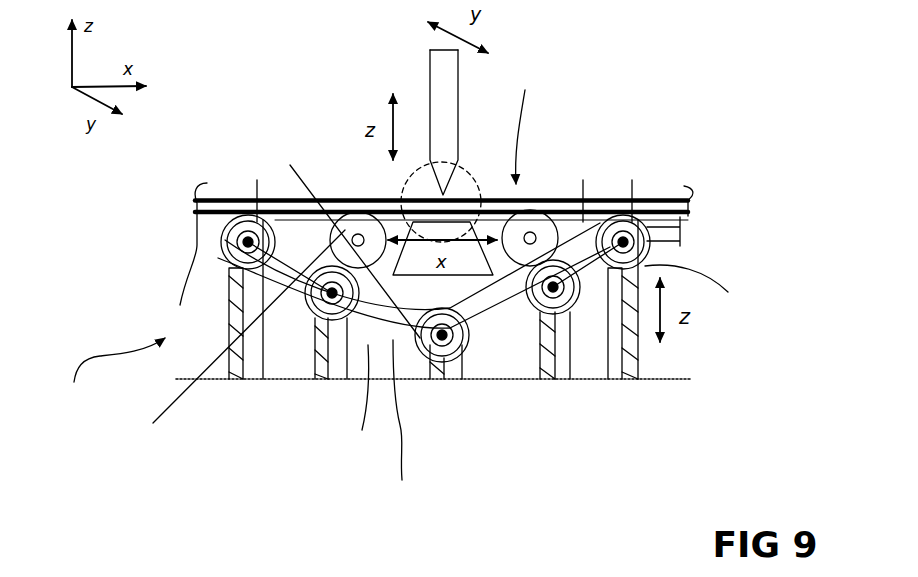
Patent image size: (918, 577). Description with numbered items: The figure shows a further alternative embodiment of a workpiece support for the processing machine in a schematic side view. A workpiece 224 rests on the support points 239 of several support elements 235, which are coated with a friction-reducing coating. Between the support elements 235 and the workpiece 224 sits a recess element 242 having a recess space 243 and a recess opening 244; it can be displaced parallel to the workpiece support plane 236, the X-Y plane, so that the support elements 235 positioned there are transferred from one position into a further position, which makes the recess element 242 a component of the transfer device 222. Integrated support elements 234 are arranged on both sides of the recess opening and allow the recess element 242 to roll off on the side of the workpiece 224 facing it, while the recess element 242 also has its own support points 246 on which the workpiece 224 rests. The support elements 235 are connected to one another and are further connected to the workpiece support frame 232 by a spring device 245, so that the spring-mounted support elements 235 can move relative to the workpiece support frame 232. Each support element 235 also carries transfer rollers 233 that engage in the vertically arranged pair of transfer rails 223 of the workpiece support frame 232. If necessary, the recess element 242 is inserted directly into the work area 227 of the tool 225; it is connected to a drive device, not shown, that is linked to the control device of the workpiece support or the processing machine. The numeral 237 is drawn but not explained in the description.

The transfer device 222 is at (102, 378).
The pair of transfer rails 223 is at (222, 381).
The workpiece 224 is at (217, 198).
The tool 225 is at (428, 72).
The work area 227 is at (392, 182).
The workpiece support frame 232 is at (675, 382).
The transfer rollers 233 is at (342, 220).
The integrated support elements 234 is at (241, 339).
The support elements 235 is at (226, 243).
The workpiece support plane 236 is at (468, 184).
The belt 237 is at (228, 276).
The support points 239 is at (257, 198).
The recess element 242 is at (359, 409).
The recess space 243 is at (404, 428).
The recess opening 244 is at (536, 120).
The spring device 245 is at (256, 393).
The support points 246 is at (402, 180).